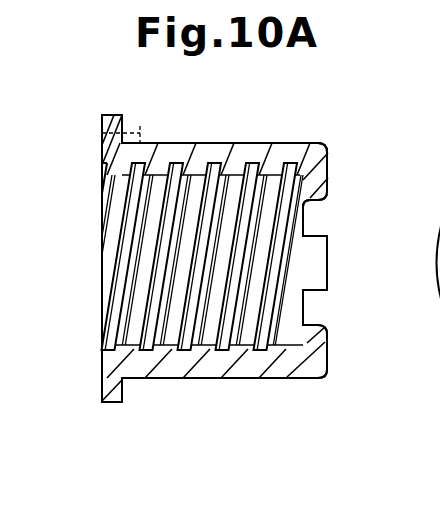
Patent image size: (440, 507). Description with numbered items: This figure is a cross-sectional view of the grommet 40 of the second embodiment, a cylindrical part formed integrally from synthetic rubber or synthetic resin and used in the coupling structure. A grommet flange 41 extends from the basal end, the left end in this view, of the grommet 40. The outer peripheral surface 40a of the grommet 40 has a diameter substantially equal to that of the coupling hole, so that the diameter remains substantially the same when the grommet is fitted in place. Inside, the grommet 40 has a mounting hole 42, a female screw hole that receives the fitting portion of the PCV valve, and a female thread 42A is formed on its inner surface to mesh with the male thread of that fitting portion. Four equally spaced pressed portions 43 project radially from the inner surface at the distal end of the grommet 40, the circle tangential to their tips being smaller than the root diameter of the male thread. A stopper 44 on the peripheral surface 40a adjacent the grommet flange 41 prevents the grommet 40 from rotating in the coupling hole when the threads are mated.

The grommet 40 is at (354, 135).
The peripheral surface 40a is at (257, 141).
The grommet flange 41 is at (111, 399).
The mounting hole 42 is at (91, 249).
The female thread 42A is at (287, 366).
The pressed portions 43 is at (325, 190).
The stopper 44 is at (139, 138).